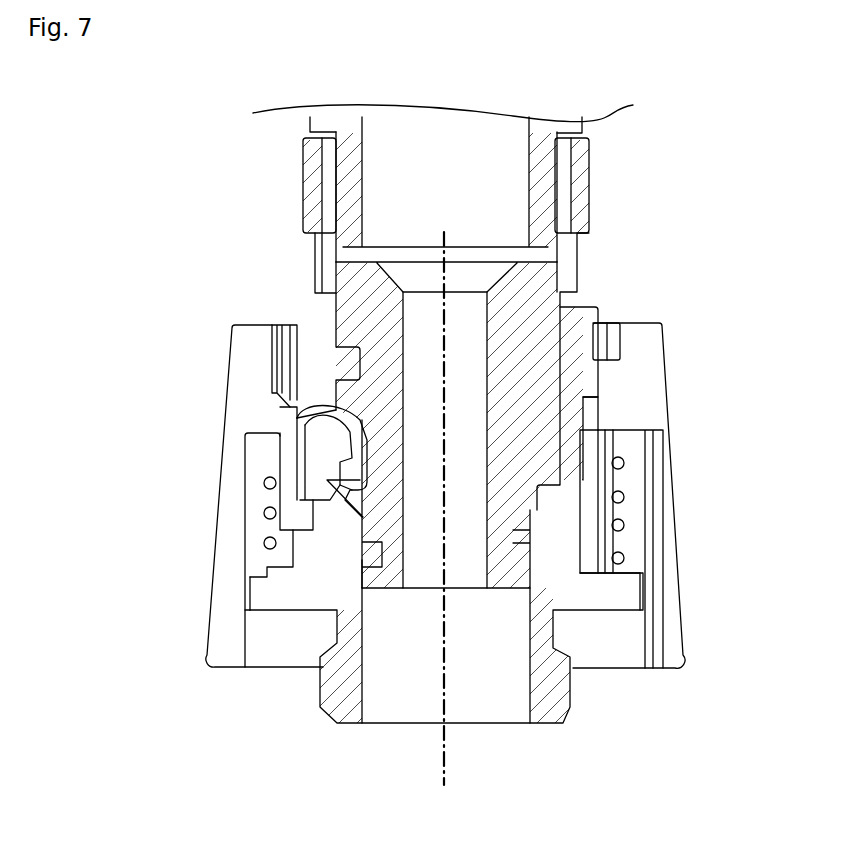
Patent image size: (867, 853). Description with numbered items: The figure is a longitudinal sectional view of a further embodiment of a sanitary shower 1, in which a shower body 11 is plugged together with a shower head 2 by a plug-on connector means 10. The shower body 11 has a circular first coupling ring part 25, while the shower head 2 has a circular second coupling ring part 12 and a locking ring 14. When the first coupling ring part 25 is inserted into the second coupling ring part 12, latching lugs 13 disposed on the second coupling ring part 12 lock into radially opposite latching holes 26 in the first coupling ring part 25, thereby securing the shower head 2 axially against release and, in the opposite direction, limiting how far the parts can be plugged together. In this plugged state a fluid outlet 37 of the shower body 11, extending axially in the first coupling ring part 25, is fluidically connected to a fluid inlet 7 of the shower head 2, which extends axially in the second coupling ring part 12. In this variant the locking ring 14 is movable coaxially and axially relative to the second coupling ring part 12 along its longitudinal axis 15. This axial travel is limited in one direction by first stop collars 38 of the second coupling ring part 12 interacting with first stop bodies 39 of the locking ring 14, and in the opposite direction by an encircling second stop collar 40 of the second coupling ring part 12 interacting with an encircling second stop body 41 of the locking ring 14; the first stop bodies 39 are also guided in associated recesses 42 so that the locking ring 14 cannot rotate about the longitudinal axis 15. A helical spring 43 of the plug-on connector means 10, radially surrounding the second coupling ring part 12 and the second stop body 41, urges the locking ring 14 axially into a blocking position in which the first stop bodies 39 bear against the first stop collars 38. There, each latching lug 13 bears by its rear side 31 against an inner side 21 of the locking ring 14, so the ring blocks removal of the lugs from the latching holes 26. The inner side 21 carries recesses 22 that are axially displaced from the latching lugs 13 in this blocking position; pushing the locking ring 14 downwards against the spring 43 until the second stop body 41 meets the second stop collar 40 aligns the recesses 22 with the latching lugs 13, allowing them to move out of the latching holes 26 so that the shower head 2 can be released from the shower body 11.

The sanitary shower 1 is at (648, 147).
The shower body 11 is at (545, 185).
The first coupling ring part 25 is at (540, 290).
The plug-on connector means 10 is at (332, 288).
The latching holes 26 is at (357, 427).
The recesses 22 is at (287, 368).
The inner side 21 is at (290, 407).
The latching lugs 13 is at (297, 417).
The rear side 31 is at (298, 422).
The locking ring 14 is at (223, 565).
The shower head 2 is at (220, 637).
The fluid outlet 37 is at (413, 563).
The second coupling ring part 12 is at (330, 697).
The longitudinal axis 15 is at (450, 747).
The fluid inlet 7 is at (510, 673).
The first stop collars 38 is at (587, 397).
The first stop bodies 39 is at (590, 423).
The recesses 42 is at (588, 468).
The helical spring 43 is at (620, 493).
The second stop body 41 is at (603, 538).
The second stop collar 40 is at (617, 575).